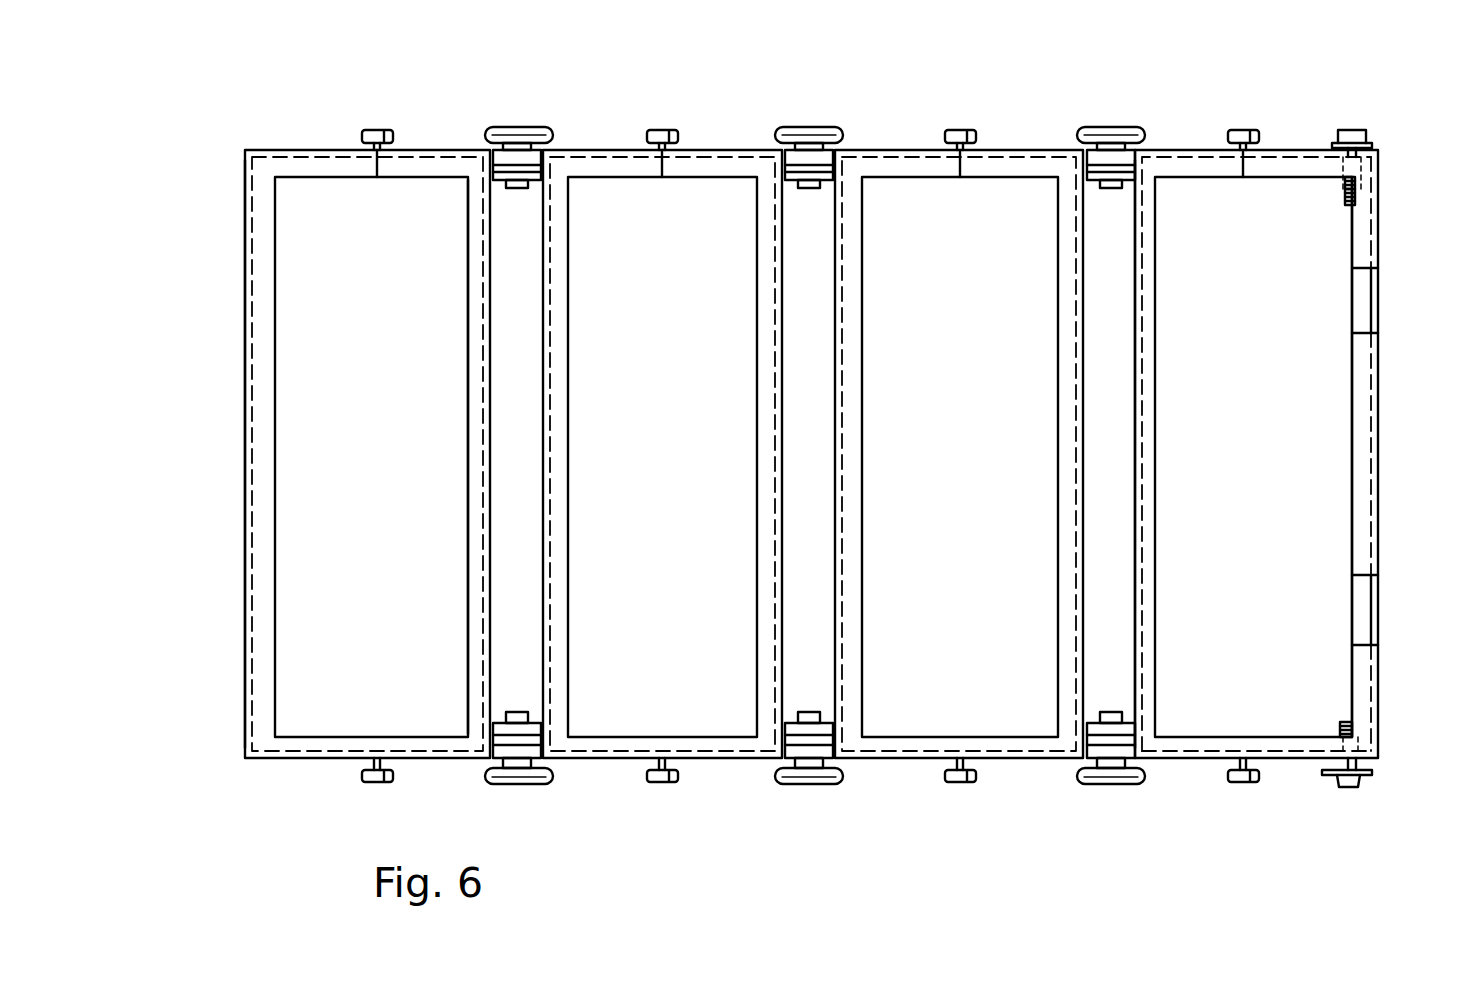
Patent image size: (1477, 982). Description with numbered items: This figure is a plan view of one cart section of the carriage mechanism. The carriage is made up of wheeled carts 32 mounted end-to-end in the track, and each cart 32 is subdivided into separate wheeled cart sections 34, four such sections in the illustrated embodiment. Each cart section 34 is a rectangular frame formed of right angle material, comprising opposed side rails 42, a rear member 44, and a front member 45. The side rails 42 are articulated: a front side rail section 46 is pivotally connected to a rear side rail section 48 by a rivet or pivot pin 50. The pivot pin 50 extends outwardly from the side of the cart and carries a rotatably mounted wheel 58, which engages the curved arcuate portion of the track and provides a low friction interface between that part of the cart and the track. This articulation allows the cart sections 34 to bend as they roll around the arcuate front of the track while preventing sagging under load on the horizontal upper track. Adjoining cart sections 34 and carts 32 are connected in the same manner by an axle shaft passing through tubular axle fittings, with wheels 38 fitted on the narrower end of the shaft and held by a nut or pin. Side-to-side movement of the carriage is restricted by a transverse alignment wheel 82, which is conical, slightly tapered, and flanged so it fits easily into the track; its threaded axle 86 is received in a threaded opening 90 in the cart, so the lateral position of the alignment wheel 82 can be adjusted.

The wheeled cart 32 is at (205, 141).
The cart section 34 is at (325, 120).
The wheel 38 is at (795, 785).
The side rail 42 is at (1023, 196).
The rear member 44 is at (473, 398).
The front member 45 is at (258, 450).
The front side rail section 46 is at (909, 168).
The rear side rail section 48 is at (990, 170).
The pivot pin 50 is at (1232, 768).
The wheel 58 is at (1250, 128).
The transverse alignment wheel 82 is at (1357, 128).
The axle 86 is at (1347, 205).
The threaded opening 90 is at (1342, 185).